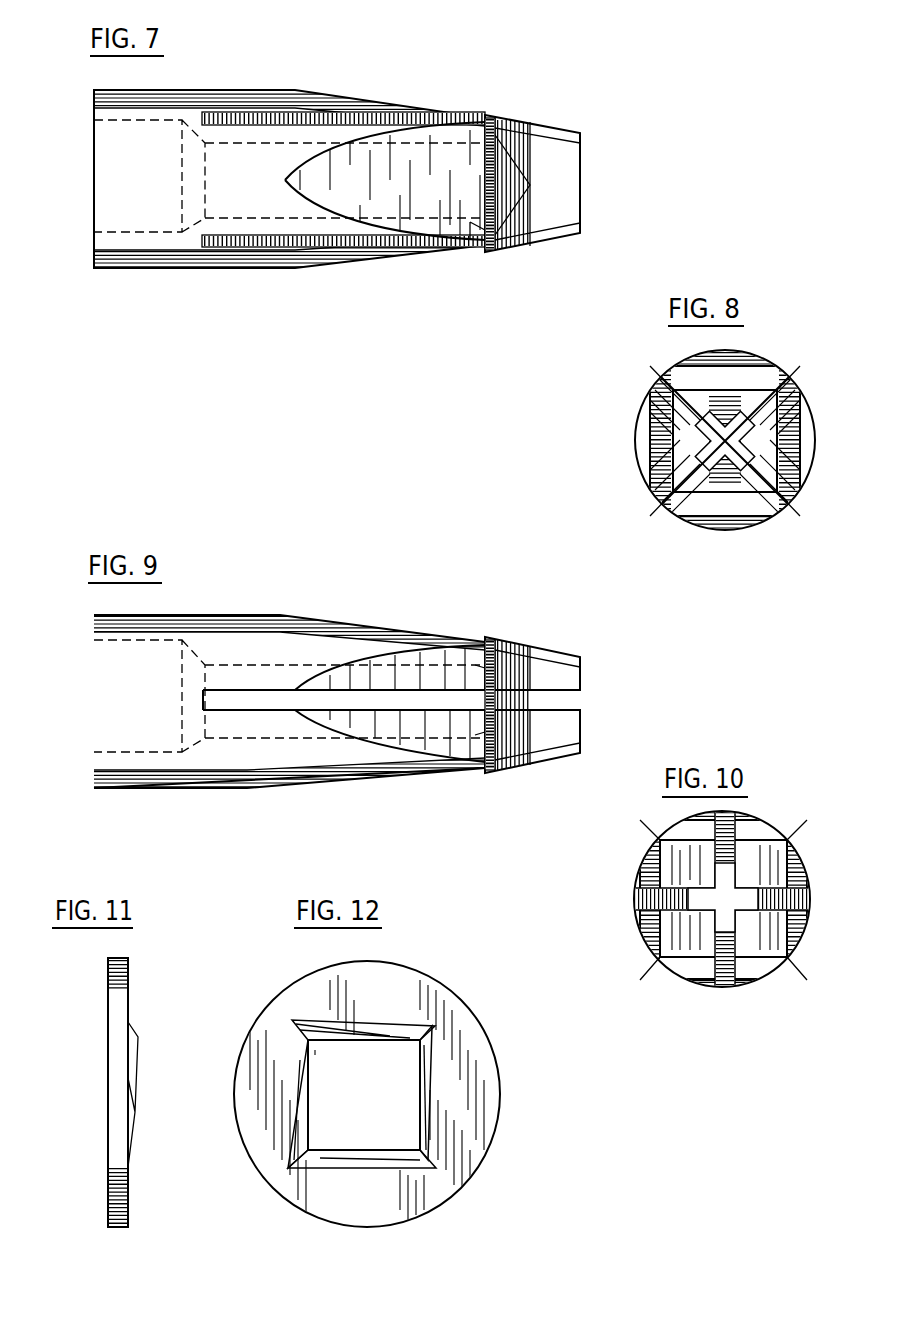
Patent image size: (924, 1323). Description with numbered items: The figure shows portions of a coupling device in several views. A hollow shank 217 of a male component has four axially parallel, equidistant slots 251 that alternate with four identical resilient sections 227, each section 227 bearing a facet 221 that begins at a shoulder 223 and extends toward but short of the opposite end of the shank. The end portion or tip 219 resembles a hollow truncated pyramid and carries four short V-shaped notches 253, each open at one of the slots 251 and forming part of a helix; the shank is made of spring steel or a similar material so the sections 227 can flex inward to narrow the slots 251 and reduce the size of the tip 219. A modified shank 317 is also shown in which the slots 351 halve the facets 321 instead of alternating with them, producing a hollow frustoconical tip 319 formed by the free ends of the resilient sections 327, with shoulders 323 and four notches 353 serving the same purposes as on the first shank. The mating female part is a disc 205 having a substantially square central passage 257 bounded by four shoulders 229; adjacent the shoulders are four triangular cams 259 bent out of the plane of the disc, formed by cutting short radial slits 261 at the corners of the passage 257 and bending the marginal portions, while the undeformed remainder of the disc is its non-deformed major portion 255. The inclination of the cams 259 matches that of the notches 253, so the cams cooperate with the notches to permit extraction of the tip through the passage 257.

In FIG. 7, the shank 217 is at (152, 202).
In FIG. 8, the shank 217 is at (762, 530).
In FIG. 7, the tip 219 is at (570, 186).
In FIG. 7, the facet 221 is at (415, 200).
In FIG. 8, the facet 221 is at (645, 445).
In FIG. 7, the shoulder 223 is at (475, 228).
In FIG. 7, the resilient section 227 is at (228, 170).
In FIG. 8, the resilient section 227 is at (788, 442).
In FIG. 7, the slot 251 is at (350, 123).
In FIG. 8, the slot 251 is at (775, 392).
In FIG. 7, the notch 253 is at (498, 140).
In FIG. 9, the shank 317 is at (216, 608).
In FIG. 10, the shank 317 is at (643, 942).
In FIG. 9, the tip 319 is at (567, 676).
In FIG. 9, the facet 321 is at (362, 673).
In FIG. 10, the facet 321 is at (693, 822).
In FIG. 9, the shoulder 323 is at (483, 667).
In FIG. 10, the resilient section 327 is at (752, 870).
In FIG. 9, the slot 351 is at (300, 700).
In FIG. 10, the slot 351 is at (724, 877).
In FIG. 9, the notch 353 is at (508, 650).
In FIG. 11, the disc 205 is at (90, 1097).
In FIG. 12, the disc 205 is at (296, 982).
In FIG. 12, the shoulder 229 is at (375, 1032).
In FIG. 11, the non-deformed major portion 255 is at (114, 1003).
In FIG. 12, the non-deformed major portion 255 is at (450, 1156).
In FIG. 12, the central passage 257 is at (388, 1087).
In FIG. 11, the cam 259 is at (137, 1130).
In FIG. 12, the cam 259 is at (426, 1052).
In FIG. 12, the slit 261 is at (426, 1032).